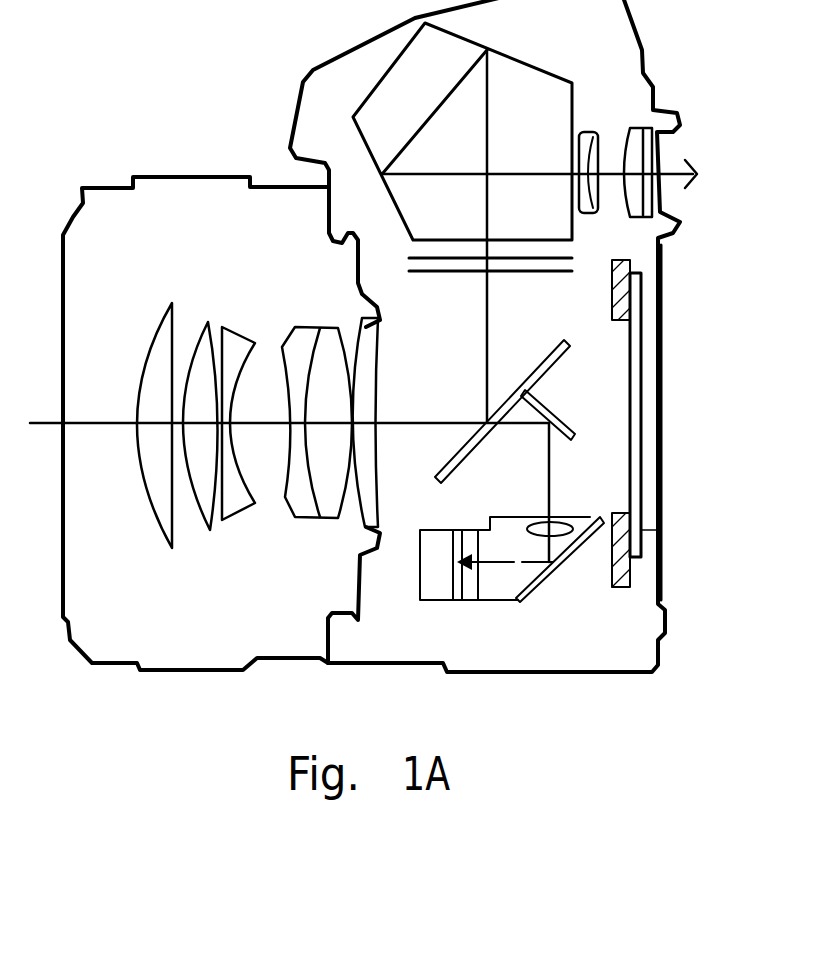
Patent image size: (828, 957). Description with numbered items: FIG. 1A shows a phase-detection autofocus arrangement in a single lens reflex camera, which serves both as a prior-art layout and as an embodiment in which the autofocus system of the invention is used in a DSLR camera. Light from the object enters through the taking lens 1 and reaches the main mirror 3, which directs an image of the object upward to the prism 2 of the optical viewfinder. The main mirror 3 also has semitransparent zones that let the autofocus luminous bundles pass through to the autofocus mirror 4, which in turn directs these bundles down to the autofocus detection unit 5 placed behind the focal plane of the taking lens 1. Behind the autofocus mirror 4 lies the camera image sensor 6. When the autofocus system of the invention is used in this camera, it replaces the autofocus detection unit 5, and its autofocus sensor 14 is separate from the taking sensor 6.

The taking lens 1 is at (248, 294).
The prism 2 is at (565, 143).
The main mirror 3 is at (538, 360).
The autofocus mirror 4 is at (570, 433).
The autofocus detection unit 5 is at (535, 605).
The camera image sensor 6 is at (628, 400).
The autofocus sensor 14 is at (458, 602).